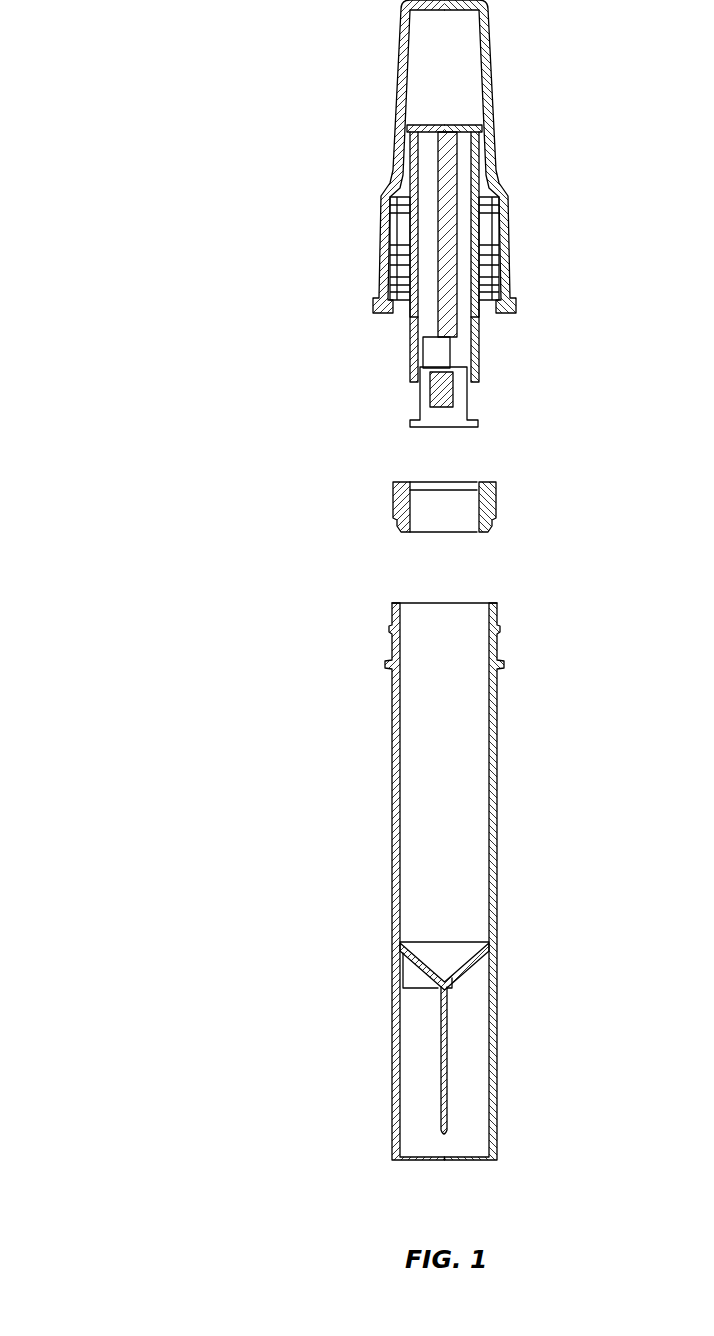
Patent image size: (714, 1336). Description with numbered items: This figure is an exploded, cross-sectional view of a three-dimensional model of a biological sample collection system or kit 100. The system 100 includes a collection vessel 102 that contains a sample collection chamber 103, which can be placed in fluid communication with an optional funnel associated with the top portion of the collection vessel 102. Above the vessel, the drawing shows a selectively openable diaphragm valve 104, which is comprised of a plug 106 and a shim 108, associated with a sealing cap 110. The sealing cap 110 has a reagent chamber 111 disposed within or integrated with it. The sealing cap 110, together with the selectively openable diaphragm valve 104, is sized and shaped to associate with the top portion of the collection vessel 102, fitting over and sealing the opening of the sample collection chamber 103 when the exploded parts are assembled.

The biological sample collection system 100 is at (118, 363).
The collection vessel 102 is at (460, 748).
The sample collection chamber 103 is at (434, 814).
The selectively openable diaphragm valve 104 is at (402, 430).
The plug 106 is at (443, 417).
The shim 108 is at (447, 510).
The sealing cap 110 is at (457, 76).
The reagent chamber 111 is at (428, 225).